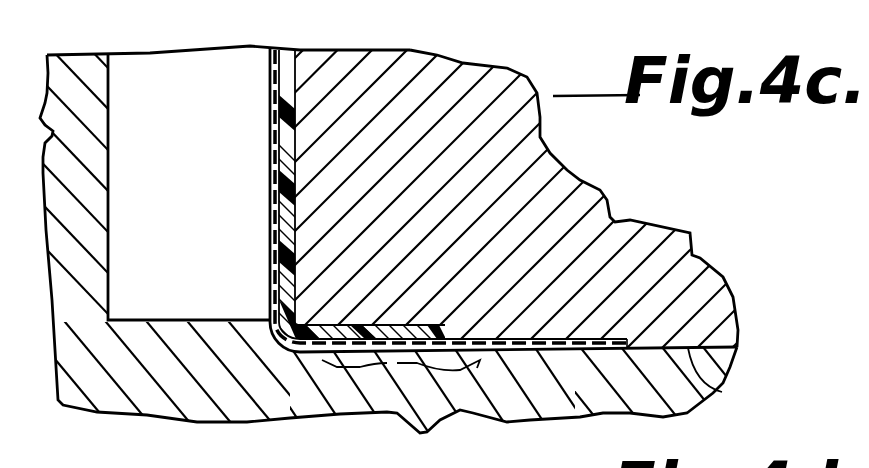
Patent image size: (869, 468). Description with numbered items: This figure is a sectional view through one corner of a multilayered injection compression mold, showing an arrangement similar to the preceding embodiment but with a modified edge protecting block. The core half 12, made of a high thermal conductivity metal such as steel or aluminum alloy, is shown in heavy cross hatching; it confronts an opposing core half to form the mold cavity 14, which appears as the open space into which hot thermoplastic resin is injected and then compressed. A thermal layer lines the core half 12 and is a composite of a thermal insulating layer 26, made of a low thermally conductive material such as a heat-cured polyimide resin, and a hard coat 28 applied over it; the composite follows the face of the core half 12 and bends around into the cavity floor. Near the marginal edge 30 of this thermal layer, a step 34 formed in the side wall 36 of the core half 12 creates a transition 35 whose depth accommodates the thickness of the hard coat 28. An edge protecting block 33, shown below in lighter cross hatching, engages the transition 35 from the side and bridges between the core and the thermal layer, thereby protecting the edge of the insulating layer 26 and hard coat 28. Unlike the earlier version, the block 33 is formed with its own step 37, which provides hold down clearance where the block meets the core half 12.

The core half 12 is at (577, 202).
The mold cavity 14 is at (185, 82).
The thermal insulating layer 26 is at (293, 63).
The hard coat 28 is at (270, 211).
The marginal edge 30 is at (445, 320).
The block 33 is at (509, 389).
The step 34 is at (594, 342).
The transition 35 is at (387, 363).
The side wall 36 is at (723, 383).
The step 37 is at (328, 352).